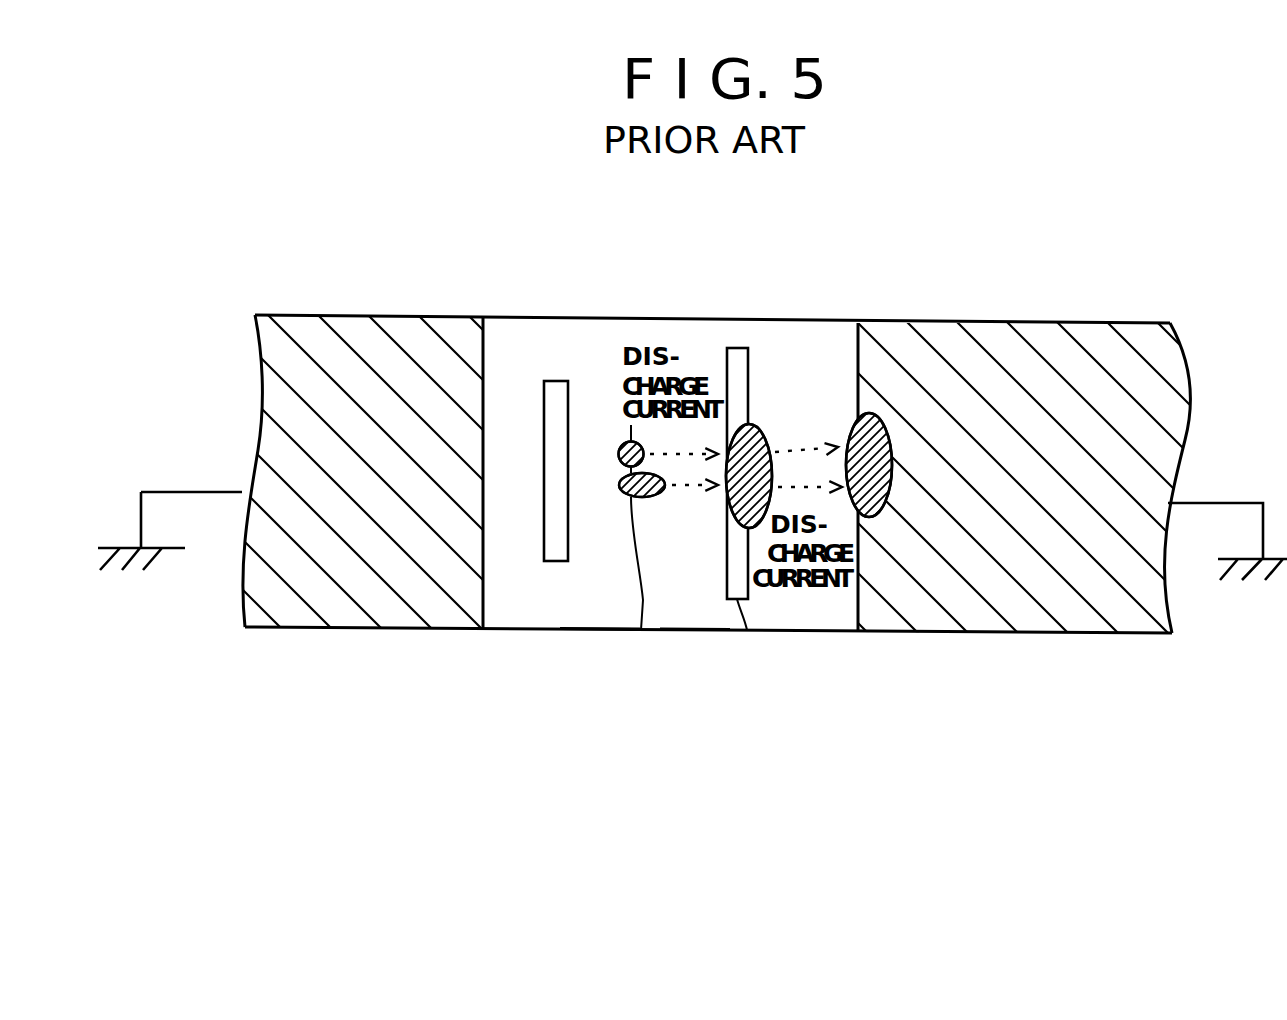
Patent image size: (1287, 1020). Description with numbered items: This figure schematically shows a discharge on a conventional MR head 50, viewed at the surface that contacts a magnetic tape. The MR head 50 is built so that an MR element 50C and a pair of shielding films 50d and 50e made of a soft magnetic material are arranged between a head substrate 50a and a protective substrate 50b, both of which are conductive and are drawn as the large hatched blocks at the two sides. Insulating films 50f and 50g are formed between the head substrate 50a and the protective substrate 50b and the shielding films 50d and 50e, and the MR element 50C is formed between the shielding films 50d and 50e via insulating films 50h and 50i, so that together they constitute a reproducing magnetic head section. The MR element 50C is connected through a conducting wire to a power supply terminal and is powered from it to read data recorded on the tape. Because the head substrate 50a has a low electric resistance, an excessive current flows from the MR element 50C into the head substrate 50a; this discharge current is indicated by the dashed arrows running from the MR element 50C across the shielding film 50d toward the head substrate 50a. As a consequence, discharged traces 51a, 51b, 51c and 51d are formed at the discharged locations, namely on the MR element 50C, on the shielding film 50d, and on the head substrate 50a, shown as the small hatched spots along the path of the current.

The MR head 50 is at (998, 174).
The head substrate 50a is at (1075, 635).
The protective substrate 50b is at (333, 630).
The MR element 50C is at (641, 630).
The shielding film 50d is at (747, 630).
The shielding film 50e is at (547, 630).
The insulating film 50f is at (844, 638).
The insulating film 50g is at (504, 644).
The insulating film 50h is at (702, 641).
The insulating film 50i is at (603, 644).
The discharged trace 51a is at (628, 438).
The discharged trace 51b is at (619, 485).
The discharged trace 51c is at (750, 425).
The discharged trace 51d is at (860, 414).